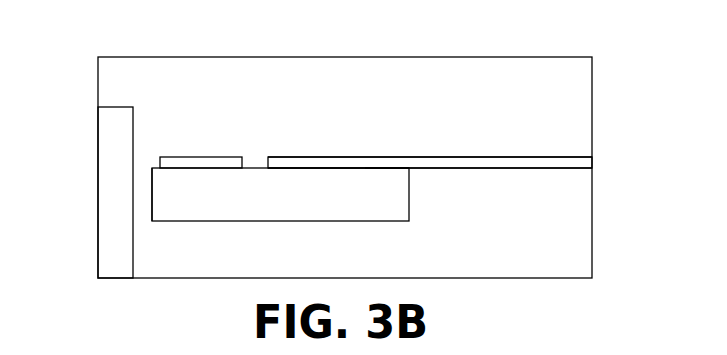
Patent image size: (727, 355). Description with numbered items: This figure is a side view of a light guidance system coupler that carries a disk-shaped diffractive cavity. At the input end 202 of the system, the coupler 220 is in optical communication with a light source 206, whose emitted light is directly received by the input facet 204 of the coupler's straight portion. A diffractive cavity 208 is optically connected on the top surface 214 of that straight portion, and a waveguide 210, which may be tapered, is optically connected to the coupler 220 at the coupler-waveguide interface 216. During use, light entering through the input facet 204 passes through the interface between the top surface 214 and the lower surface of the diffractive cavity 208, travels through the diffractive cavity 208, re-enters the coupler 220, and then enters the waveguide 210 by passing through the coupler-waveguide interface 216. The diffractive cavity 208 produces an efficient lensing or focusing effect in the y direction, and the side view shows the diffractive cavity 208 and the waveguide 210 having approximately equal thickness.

The input end 202 is at (180, 102).
The input facet 204 is at (136, 170).
The light source 206 is at (110, 201).
The diffractive cavity 208 is at (202, 157).
The waveguide 210 is at (553, 163).
The top surface 214 is at (297, 151).
The coupler-waveguide interface 216 is at (365, 168).
The coupler 220 is at (208, 210).